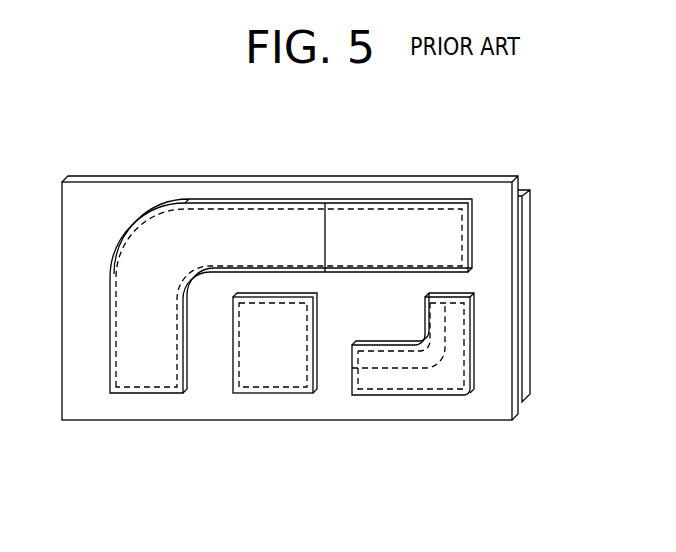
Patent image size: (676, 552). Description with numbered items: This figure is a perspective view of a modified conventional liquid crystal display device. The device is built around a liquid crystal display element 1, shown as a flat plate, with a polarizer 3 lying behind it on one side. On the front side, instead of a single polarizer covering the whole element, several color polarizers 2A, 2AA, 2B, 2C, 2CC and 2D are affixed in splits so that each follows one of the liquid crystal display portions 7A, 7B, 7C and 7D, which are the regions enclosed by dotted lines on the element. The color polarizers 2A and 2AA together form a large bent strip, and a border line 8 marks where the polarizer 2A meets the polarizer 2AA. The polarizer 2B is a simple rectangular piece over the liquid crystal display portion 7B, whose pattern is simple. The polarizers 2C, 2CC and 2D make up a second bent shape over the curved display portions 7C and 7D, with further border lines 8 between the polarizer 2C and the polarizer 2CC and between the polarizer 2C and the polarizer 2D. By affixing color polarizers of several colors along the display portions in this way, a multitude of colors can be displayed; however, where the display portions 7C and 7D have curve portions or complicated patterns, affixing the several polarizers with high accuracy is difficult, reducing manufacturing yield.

The liquid crystal display element 1 is at (518, 406).
The polarizer 3 is at (532, 211).
The color polarizer 2A is at (140, 393).
The color polarizer 2AA is at (416, 205).
The color polarizer 2B is at (281, 393).
The color polarizer 2C is at (380, 370).
The color polarizer 2CC is at (440, 297).
The color polarizer 2D is at (416, 395).
The liquid crystal display portion 7A is at (246, 210).
The liquid crystal display portion 7B is at (244, 378).
The liquid crystal display portion 7C is at (371, 357).
The liquid crystal display portion 7D is at (437, 373).
The border lines 8 is at (328, 210).